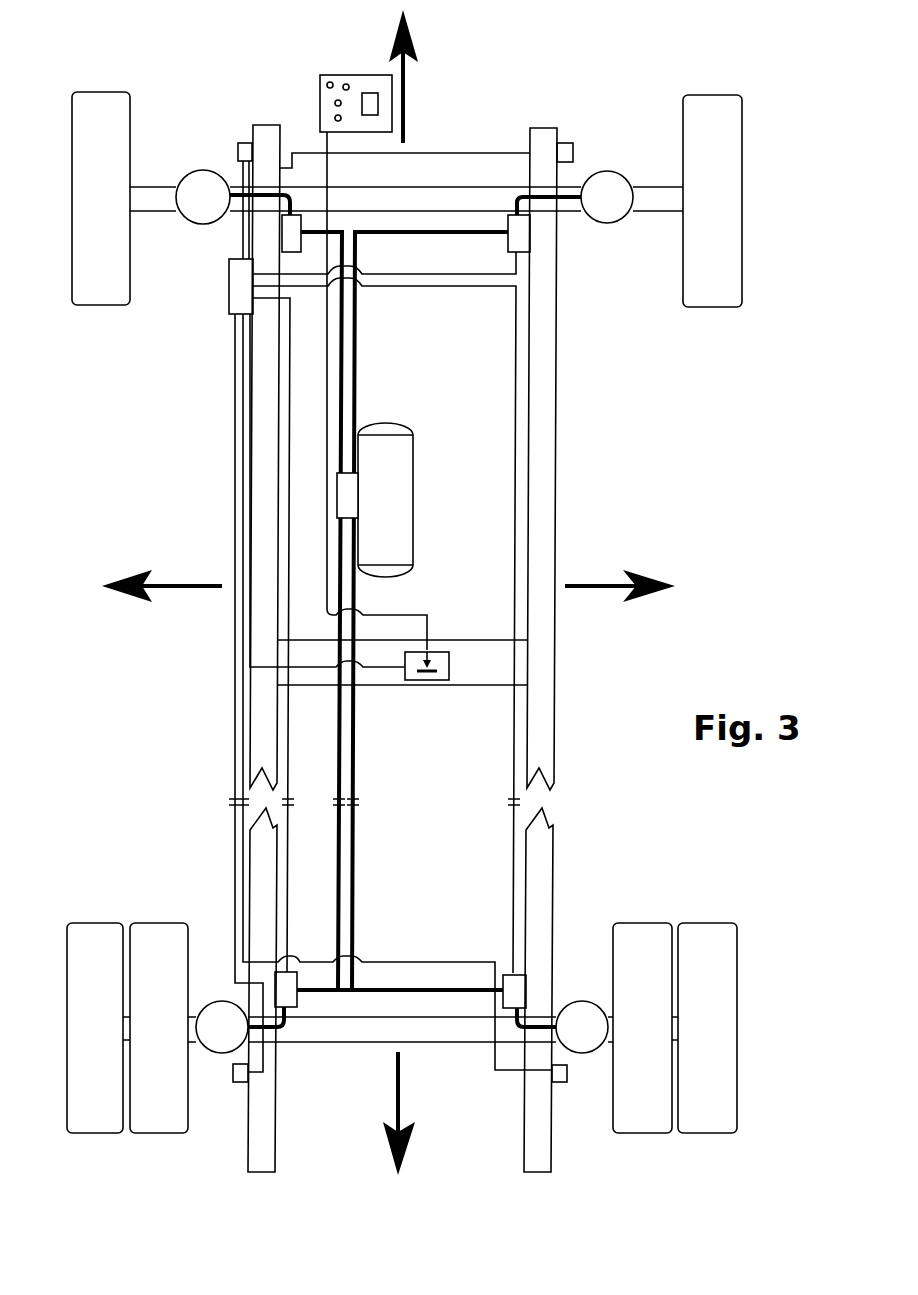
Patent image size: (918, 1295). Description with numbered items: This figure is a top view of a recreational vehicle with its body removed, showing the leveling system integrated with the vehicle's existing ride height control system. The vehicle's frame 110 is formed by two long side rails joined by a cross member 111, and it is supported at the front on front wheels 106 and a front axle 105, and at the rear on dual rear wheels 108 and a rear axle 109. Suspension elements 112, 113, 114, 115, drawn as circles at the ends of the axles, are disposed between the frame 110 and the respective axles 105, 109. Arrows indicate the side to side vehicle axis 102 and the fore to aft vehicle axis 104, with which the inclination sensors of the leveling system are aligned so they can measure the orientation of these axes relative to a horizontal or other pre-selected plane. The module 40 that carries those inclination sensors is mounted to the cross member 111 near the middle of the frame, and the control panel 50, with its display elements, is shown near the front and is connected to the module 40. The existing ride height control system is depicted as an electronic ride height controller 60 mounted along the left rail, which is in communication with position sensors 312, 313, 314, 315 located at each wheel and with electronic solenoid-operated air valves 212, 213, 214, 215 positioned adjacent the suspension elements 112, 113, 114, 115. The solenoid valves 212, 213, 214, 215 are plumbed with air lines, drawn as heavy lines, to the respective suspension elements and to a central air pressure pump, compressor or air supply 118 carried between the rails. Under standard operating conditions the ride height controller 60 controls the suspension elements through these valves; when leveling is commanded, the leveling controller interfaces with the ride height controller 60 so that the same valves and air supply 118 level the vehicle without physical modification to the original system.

The module 40 is at (441, 680).
The control panel 50 is at (352, 75).
The electronic ride height controller 60 is at (235, 290).
The side to side vehicle axis 102 is at (590, 587).
The fore to aft vehicle axis 104 is at (400, 1100).
The front axle 105 is at (153, 187).
The front wheels 106 is at (125, 92).
The rear wheels 108 is at (90, 928).
The rear axle 109 is at (470, 1043).
The frame 110 is at (275, 125).
The cross member 111 is at (478, 655).
The suspension element 112 is at (208, 177).
The suspension element 113 is at (605, 218).
The suspension element 114 is at (212, 1015).
The suspension element 115 is at (575, 1010).
The air supply 118 is at (405, 483).
The electronic solenoid-operated air valve 212 is at (298, 220).
The electronic solenoid-operated air valve 213 is at (508, 246).
The electronic solenoid-operated air valve 214 is at (300, 1010).
The electronic solenoid-operated air valve 215 is at (505, 977).
The position sensor 312 is at (243, 137).
The position sensor 313 is at (563, 143).
The position sensor 314 is at (240, 1083).
The position sensor 315 is at (557, 1082).